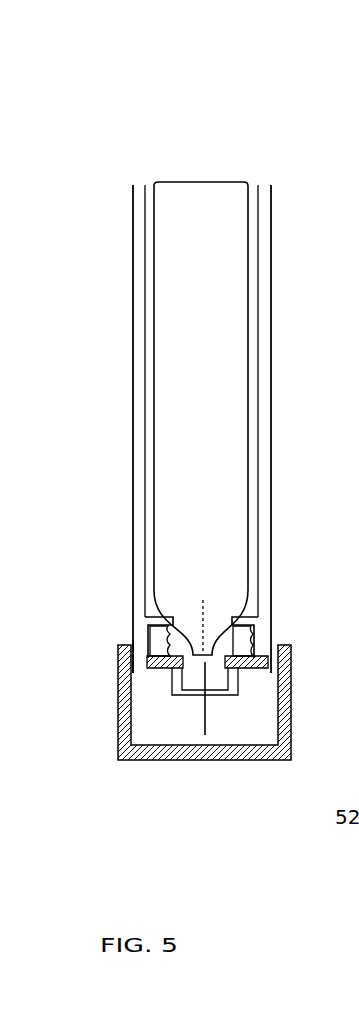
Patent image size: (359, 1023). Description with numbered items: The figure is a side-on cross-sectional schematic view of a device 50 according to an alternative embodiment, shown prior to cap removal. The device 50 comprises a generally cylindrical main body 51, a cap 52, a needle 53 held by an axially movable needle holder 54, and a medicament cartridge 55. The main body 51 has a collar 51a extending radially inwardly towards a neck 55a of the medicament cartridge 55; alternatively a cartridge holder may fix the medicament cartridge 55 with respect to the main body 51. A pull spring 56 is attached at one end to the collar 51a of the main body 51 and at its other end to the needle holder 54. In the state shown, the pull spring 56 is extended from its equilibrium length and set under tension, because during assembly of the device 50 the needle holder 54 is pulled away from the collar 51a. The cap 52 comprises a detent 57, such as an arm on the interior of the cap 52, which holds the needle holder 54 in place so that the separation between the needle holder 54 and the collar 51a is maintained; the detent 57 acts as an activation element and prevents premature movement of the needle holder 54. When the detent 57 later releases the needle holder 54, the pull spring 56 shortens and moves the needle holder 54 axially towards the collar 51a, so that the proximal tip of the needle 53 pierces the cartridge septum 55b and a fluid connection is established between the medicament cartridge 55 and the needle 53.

The device 50 is at (158, 118).
The main body 51 is at (126, 283).
The collar 51a is at (250, 609).
The cap 52 is at (116, 721).
The needle 53 is at (201, 715).
The needle holder 54 is at (259, 678).
The medicament cartridge 55 is at (218, 217).
The neck 55a is at (215, 638).
The cartridge septum 55b is at (201, 612).
The pull spring 56 is at (140, 627).
The detent 57 is at (127, 633).